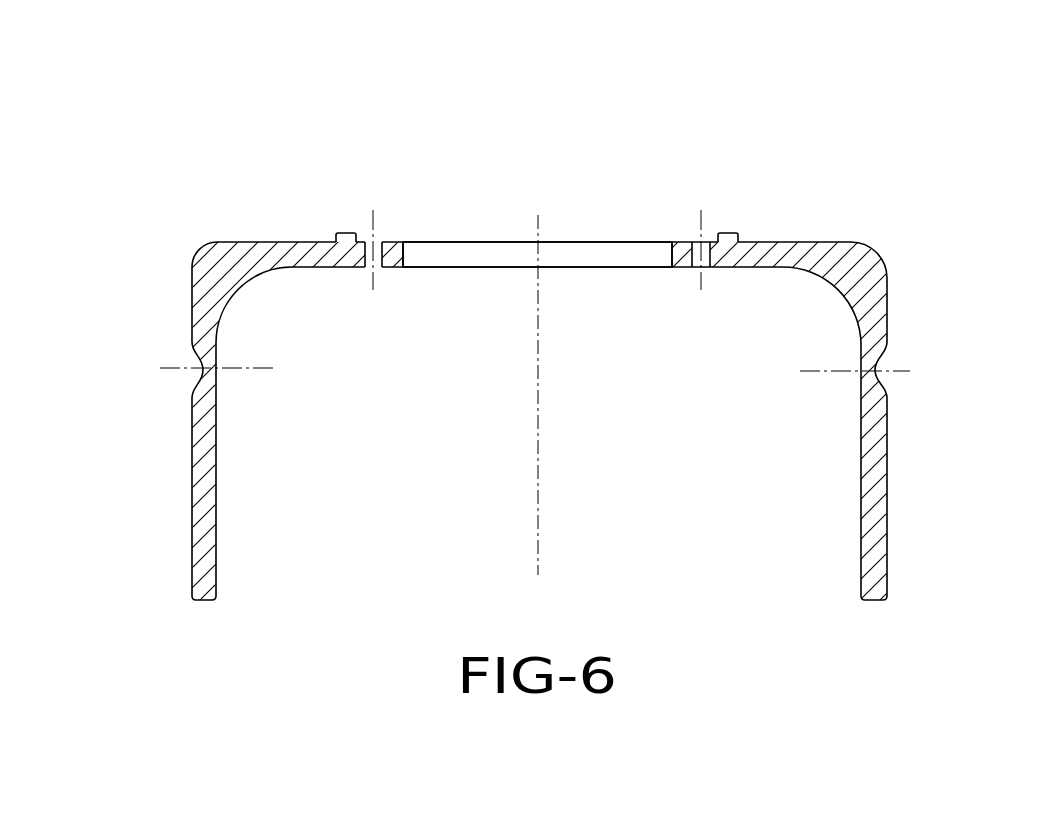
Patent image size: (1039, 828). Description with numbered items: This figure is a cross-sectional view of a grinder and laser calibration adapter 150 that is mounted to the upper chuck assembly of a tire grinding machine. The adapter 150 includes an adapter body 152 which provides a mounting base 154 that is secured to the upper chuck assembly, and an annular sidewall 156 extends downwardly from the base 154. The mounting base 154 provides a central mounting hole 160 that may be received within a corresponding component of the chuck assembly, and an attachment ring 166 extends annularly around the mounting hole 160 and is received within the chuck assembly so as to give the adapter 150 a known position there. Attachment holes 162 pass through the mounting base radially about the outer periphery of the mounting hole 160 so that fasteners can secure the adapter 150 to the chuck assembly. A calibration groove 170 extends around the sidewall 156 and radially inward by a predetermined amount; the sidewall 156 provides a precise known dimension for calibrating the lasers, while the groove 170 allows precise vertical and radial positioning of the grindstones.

The grinder and laser calibration adapter 150 is at (200, 157).
The adapter body 152 is at (860, 237).
The mounting base 154 is at (810, 244).
The annular sidewall 156 is at (887, 487).
The mounting hole 160 is at (599, 250).
The attachment holes 162 is at (379, 258).
The attachment ring 166 is at (344, 234).
The calibration groove 170 is at (200, 372).